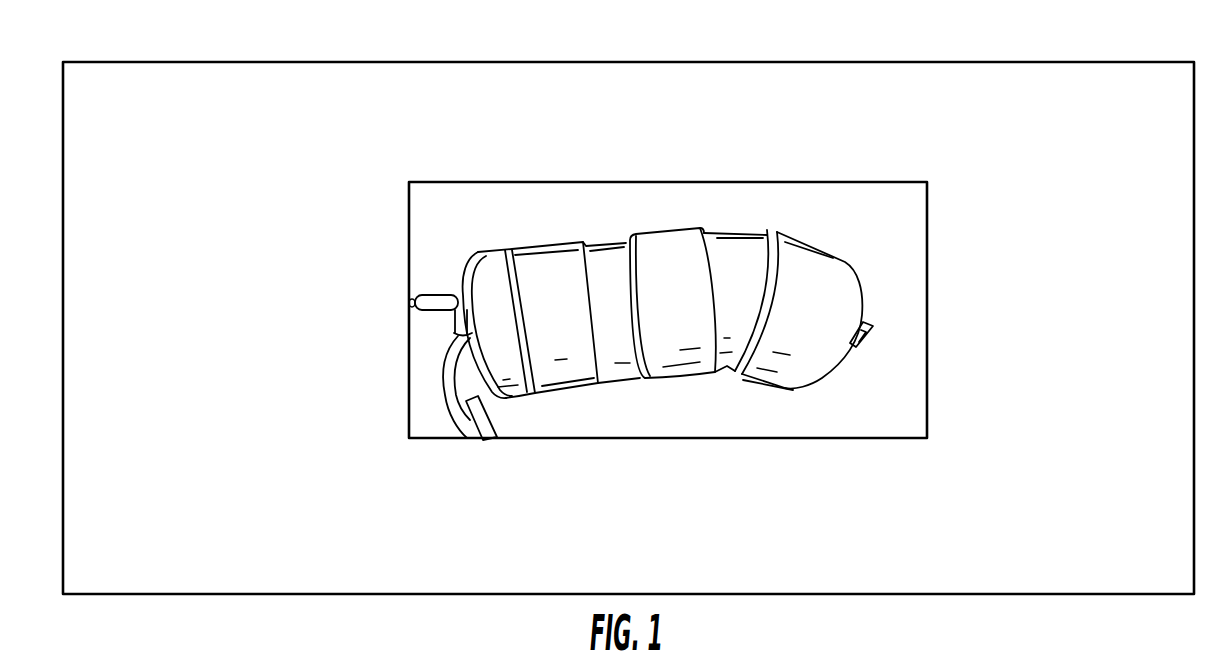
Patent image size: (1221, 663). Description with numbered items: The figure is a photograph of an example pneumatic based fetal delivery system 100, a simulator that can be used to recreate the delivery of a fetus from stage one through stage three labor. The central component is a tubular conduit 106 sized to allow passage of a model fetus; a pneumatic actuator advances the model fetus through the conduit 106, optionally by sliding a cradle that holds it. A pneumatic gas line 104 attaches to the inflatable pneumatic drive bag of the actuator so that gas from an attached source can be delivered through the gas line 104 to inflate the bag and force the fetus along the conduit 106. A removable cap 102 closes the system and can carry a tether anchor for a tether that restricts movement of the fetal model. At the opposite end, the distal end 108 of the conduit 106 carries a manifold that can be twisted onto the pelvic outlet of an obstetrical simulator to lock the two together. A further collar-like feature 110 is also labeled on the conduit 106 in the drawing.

The pneumatic based fetal delivery system 100 is at (931, 100).
The removable cap 102 is at (450, 294).
The pneumatic gas line 104 is at (432, 385).
The conduit 106 is at (635, 372).
The distal end 108 is at (872, 357).
The collar ring 110 is at (784, 291).